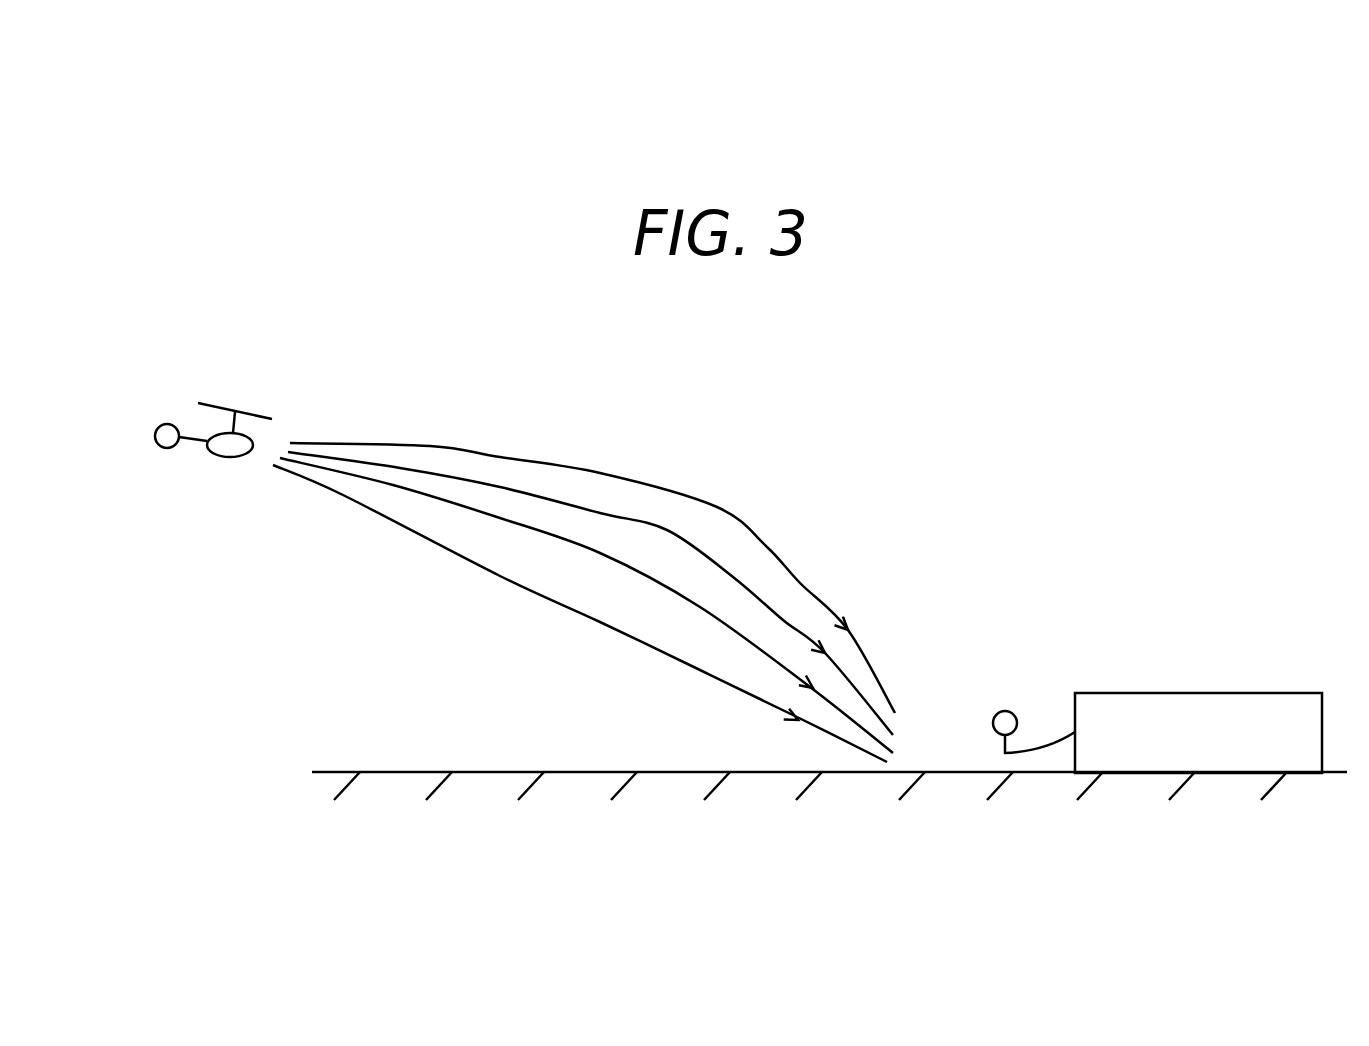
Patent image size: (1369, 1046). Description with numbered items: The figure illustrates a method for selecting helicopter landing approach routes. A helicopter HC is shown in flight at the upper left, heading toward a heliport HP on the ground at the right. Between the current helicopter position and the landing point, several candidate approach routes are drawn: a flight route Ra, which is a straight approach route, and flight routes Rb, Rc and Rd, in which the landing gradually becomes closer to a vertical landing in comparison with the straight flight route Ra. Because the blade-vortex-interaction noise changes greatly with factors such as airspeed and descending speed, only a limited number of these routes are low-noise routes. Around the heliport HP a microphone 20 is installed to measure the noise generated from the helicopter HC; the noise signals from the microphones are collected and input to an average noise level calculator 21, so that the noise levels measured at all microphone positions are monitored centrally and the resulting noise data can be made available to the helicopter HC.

The helicopter HC is at (155, 432).
The flight route Ra is at (343, 495).
The flight route Rb is at (393, 485).
The flight route Rc is at (362, 460).
The flight route Rd is at (430, 445).
The heliport HP is at (910, 783).
The microphone 20 is at (1005, 711).
The average noise level calculator 21 is at (1163, 700).